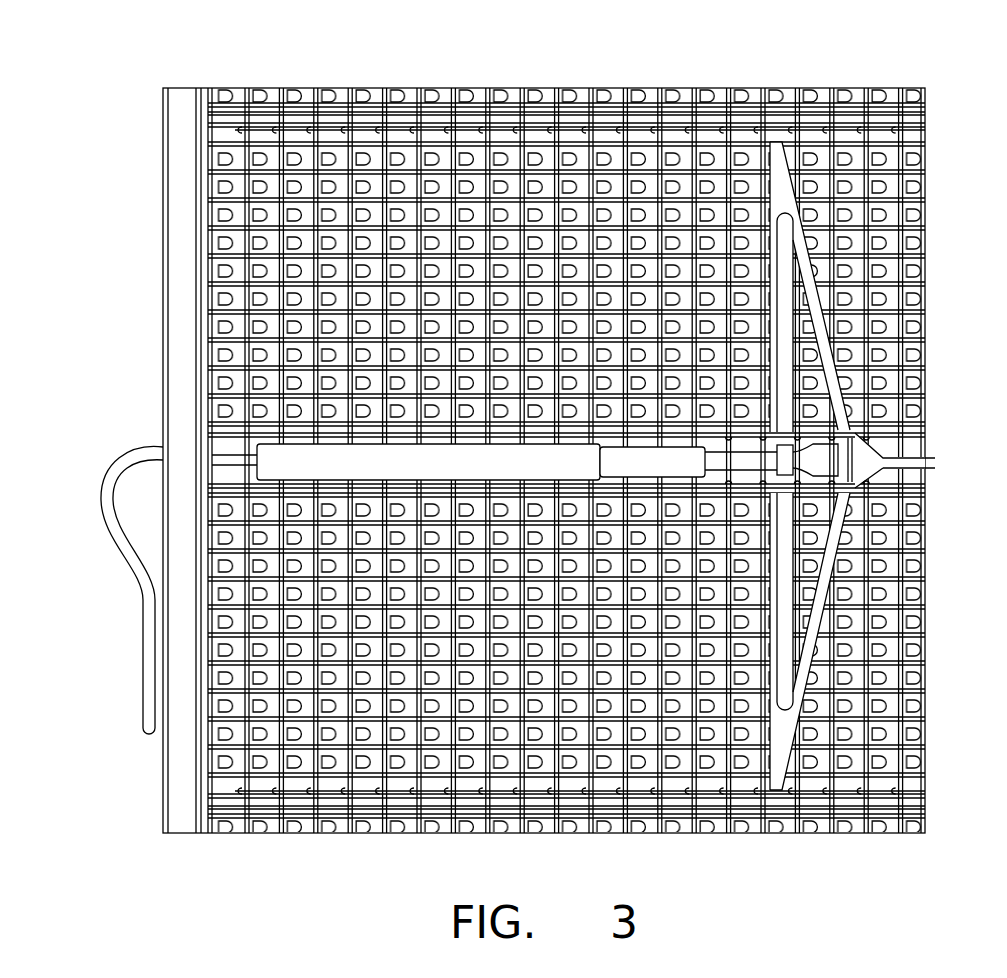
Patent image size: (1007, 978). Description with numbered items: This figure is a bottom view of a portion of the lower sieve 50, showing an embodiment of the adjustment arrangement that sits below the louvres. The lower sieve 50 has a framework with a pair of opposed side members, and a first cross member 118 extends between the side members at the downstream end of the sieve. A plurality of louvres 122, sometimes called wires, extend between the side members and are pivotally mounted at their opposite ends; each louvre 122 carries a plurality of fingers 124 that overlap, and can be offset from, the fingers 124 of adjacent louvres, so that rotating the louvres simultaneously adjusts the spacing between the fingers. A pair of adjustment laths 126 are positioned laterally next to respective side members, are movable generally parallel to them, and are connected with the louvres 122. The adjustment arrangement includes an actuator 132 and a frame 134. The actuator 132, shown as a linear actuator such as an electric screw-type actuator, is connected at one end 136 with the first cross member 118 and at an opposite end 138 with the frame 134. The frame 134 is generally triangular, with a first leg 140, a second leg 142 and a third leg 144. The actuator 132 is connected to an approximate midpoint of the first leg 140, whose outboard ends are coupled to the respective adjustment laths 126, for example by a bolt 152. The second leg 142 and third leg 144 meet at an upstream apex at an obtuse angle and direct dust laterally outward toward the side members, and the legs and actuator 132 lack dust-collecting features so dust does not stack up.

The lower sieve 50 is at (600, 82).
The first cross member 118 is at (185, 361).
The louvres 122 is at (505, 92).
The fingers 124 is at (757, 170).
The adjustment laths 126 is at (258, 92).
The actuator 132 is at (457, 473).
The frame 134 is at (796, 355).
The end of the actuator 136 is at (262, 478).
The opposite end of the actuator 138 is at (752, 481).
The first leg 140 is at (834, 301).
The second leg 142 is at (834, 641).
The third leg 144 is at (840, 392).
The bolt 152 is at (770, 833).